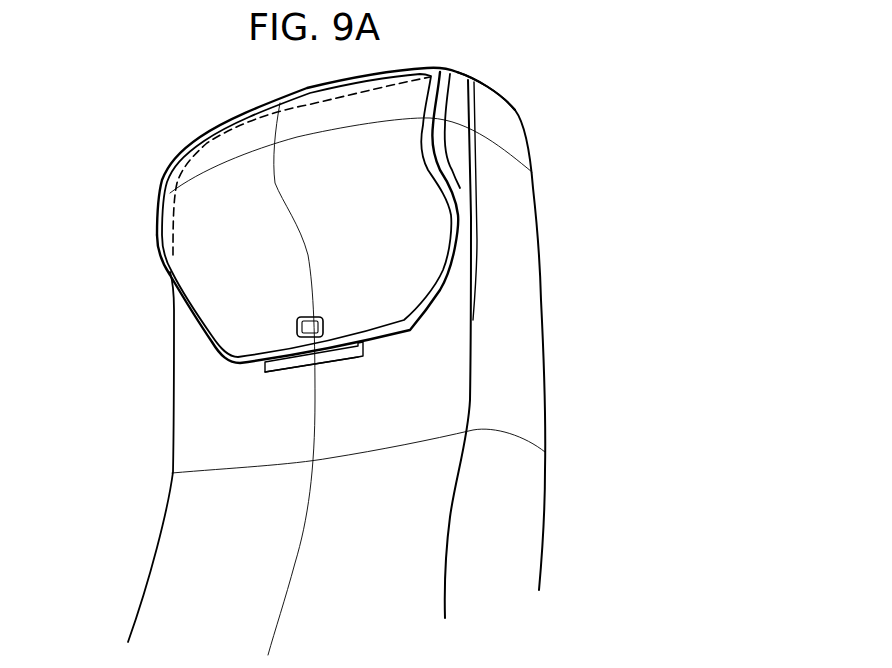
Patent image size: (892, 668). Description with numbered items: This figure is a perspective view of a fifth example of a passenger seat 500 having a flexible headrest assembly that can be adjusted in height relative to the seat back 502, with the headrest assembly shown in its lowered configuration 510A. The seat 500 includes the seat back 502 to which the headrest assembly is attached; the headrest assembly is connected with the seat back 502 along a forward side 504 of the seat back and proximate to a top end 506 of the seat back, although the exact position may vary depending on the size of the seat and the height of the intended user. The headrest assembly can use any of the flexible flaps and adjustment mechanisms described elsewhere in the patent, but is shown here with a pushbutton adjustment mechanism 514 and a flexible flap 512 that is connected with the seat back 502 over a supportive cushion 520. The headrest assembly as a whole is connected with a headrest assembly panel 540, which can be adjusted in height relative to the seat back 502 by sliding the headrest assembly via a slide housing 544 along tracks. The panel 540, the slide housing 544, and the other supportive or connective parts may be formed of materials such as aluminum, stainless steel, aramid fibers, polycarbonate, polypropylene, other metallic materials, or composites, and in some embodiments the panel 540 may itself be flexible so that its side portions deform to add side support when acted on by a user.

The passenger seat 500 is at (140, 158).
The seat back 502 is at (538, 287).
The forward side 504 is at (394, 491).
The top end 506 is at (493, 92).
The lowered configuration 510A is at (455, 68).
The flexible flap 512 is at (173, 228).
The pushbutton adjustment mechanism 514 is at (293, 325).
The supportive cushion 520 is at (462, 117).
The headrest assembly panel 540 is at (363, 357).
The slide housing 544 is at (287, 372).